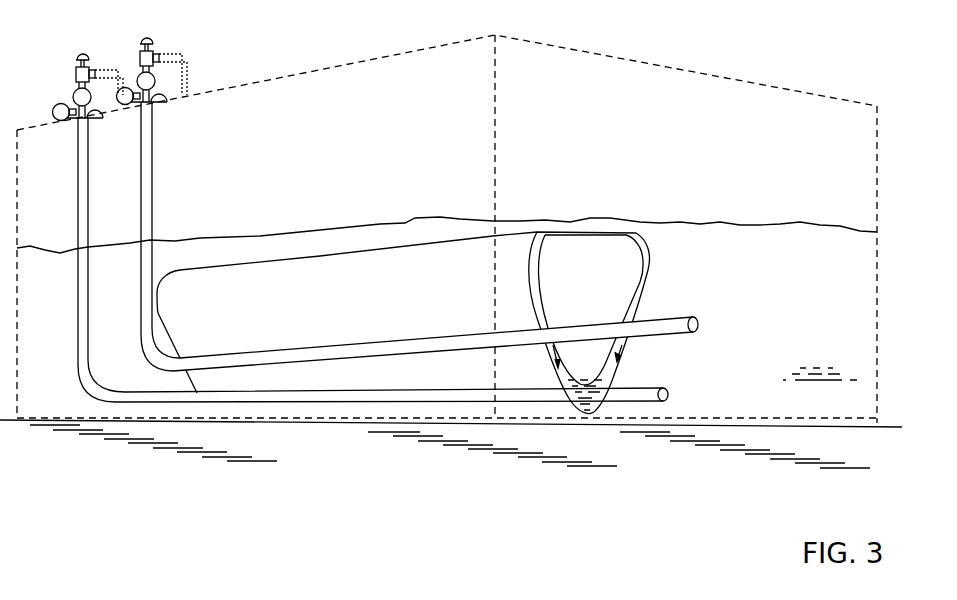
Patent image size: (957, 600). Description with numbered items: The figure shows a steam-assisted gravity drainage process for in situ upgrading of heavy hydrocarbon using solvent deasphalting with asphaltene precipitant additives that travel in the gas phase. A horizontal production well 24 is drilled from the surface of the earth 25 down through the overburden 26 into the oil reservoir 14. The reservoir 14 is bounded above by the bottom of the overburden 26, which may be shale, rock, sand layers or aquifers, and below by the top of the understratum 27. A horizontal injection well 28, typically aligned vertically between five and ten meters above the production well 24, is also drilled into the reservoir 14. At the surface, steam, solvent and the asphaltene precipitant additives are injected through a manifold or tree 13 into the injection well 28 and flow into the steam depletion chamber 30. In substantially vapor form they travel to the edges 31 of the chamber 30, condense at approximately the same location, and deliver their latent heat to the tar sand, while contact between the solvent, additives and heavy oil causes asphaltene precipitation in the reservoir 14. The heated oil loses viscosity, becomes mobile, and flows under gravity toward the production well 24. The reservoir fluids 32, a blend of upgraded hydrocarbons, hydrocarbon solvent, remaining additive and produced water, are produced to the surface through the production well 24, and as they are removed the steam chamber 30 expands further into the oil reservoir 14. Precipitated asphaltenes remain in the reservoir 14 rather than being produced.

The manifold or tree 13 is at (190, 53).
The horizontal production well 24 is at (90, 220).
The horizontal injection well 28 is at (153, 220).
The surface of the earth 25 is at (707, 75).
The overburden 26 is at (850, 167).
The oil reservoir 14 is at (852, 297).
The steam depletion chamber 30 is at (653, 268).
The edges of the chamber 31 is at (630, 300).
The reservoir fluids 32 is at (617, 378).
The understratum 27 is at (680, 448).